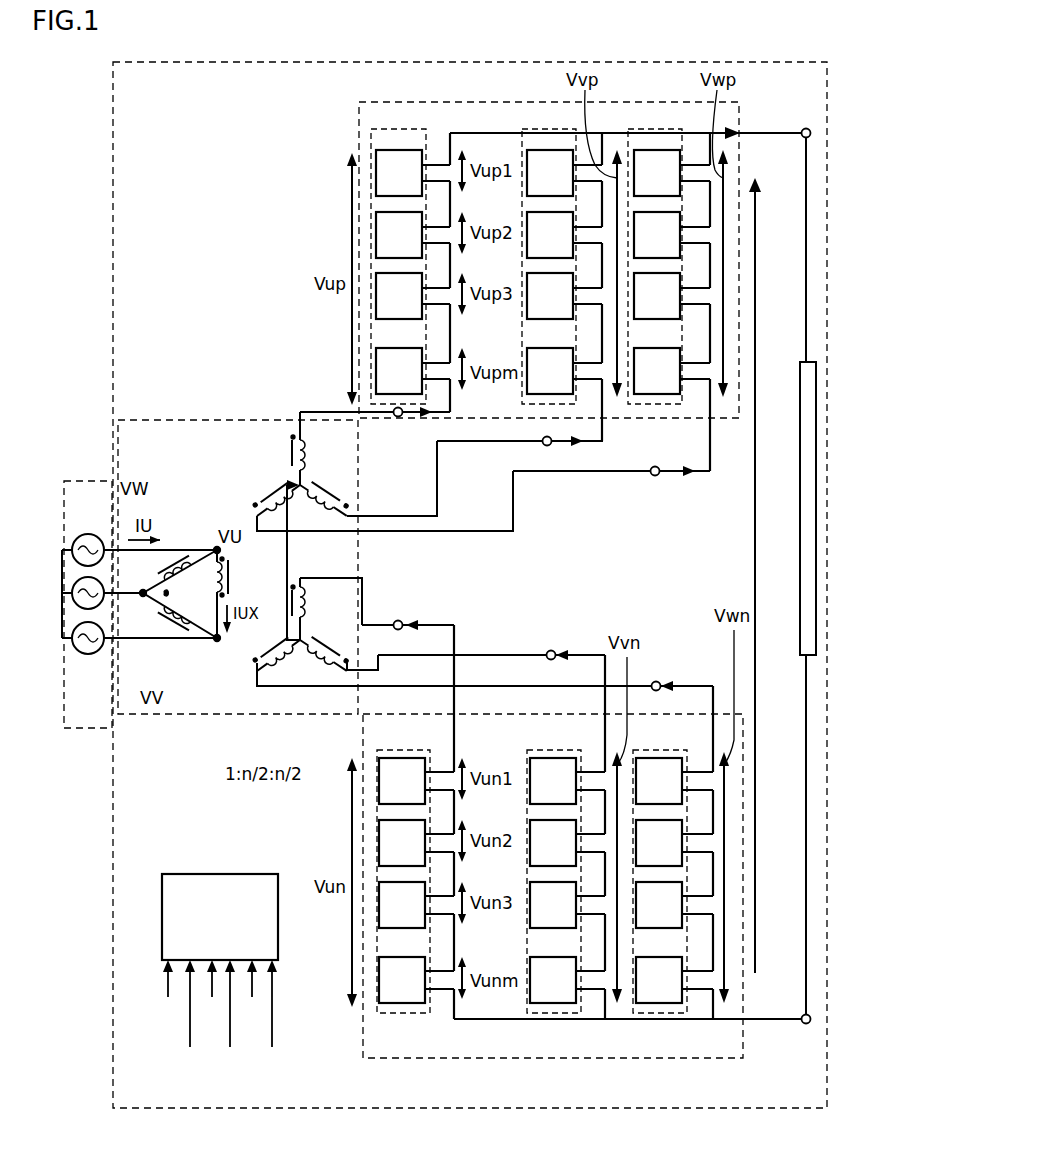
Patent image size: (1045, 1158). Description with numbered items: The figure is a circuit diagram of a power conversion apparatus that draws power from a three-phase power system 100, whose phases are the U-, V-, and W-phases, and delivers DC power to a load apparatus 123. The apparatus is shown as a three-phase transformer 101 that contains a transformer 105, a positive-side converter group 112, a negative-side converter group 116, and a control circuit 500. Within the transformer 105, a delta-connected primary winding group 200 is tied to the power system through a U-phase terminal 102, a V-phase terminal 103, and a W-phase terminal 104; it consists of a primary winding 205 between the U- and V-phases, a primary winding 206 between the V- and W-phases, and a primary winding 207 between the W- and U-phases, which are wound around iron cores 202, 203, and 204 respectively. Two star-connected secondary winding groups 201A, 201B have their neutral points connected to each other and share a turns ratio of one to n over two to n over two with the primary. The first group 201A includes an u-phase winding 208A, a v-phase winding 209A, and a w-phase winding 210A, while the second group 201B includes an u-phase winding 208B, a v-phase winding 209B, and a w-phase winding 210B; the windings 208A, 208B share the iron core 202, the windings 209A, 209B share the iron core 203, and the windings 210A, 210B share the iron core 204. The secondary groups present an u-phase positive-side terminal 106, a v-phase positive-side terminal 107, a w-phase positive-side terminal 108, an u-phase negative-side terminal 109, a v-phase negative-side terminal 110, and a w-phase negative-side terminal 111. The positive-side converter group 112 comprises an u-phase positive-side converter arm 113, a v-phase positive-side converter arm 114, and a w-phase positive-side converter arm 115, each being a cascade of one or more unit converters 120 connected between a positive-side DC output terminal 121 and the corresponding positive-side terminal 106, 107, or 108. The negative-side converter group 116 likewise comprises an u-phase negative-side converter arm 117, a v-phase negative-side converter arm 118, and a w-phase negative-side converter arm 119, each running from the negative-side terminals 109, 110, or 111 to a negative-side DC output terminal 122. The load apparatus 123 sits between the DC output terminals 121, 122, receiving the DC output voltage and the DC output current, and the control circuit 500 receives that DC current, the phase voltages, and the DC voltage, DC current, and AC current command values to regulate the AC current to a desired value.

The three-phase power system 100 is at (78, 480).
The three-phase transformer 101 is at (412, 1109).
The U-phase terminal 102 is at (135, 553).
The V-phase terminal 103 is at (130, 641).
The W-phase terminal 104 is at (132, 596).
The transformer 105 is at (206, 418).
The u-phase positive-side terminal 106 is at (402, 418).
The v-phase positive-side terminal 107 is at (520, 452).
The w-phase positive-side terminal 108 is at (611, 473).
The u-phase negative-side terminal 109 is at (408, 627).
The v-phase negative-side terminal 110 is at (491, 644).
The w-phase negative-side terminal 111 is at (485, 676).
The positive-side converter group 112 is at (378, 102).
The u-phase positive-side converter arm 113 is at (392, 129).
The v-phase positive-side converter arm 114 is at (545, 129).
The w-phase positive-side converter arm 115 is at (668, 128).
The negative-side converter group 116 is at (390, 1058).
The u-phase negative-side converter arm 117 is at (392, 1013).
The v-phase negative-side converter arm 118 is at (530, 1013).
The w-phase negative-side converter arm 119 is at (636, 1013).
The unit converter 120 is at (382, 150).
The positive-side DC output terminal 121 is at (637, 124).
The negative-side DC output terminal 122 is at (652, 1031).
The load apparatus 123 is at (800, 383).
The primary winding group 200 is at (222, 650).
The secondary winding group 201A is at (360, 526).
The secondary winding group 201B is at (481, 642).
The iron core 202 is at (291, 448).
The iron core 203 is at (168, 622).
The iron core 204 is at (170, 535).
The primary winding 205 is at (230, 560).
The primary winding 206 is at (205, 652).
The primary winding 207 is at (185, 566).
The u-phase winding 208A is at (328, 451).
The u-phase winding 208B is at (328, 599).
The v-phase winding 209A is at (330, 507).
The v-phase winding 209B is at (320, 660).
The w-phase winding 210A is at (243, 520).
The w-phase winding 210B is at (275, 668).
The control circuit 500 is at (205, 874).